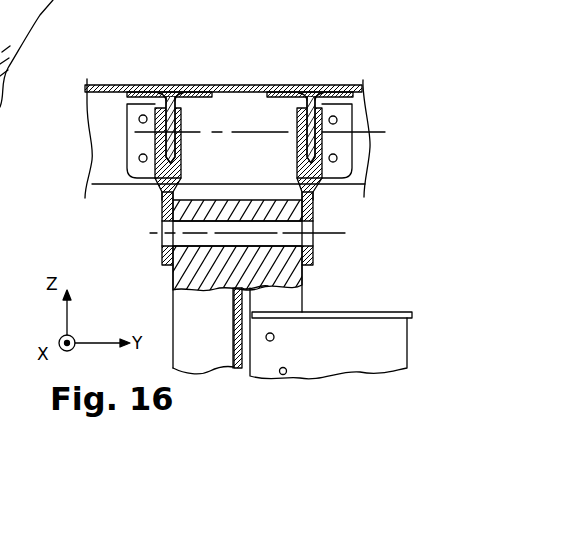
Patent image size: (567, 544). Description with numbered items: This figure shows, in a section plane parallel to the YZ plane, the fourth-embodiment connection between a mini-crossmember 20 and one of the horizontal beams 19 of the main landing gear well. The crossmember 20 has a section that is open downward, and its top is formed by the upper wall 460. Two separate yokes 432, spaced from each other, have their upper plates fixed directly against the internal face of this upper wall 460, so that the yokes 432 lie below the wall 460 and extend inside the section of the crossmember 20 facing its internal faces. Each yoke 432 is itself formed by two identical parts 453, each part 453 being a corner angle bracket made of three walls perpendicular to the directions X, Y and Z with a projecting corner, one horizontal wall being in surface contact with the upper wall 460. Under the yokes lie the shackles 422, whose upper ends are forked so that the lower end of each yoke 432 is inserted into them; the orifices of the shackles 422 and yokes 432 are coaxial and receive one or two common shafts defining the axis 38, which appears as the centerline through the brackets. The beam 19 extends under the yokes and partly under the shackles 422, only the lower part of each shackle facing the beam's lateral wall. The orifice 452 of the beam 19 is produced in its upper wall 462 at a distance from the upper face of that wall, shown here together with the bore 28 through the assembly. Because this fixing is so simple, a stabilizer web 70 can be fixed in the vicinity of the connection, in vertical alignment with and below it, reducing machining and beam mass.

The crossmember 20 is at (97, 105).
The part 453 is at (175, 90).
The upper wall 460 is at (224, 86).
The yoke 432 is at (149, 104).
The axis 38 is at (378, 132).
The shackle 422 is at (154, 203).
The bore 28 is at (336, 234).
The orifice 452 is at (196, 249).
The upper wall 462 is at (268, 273).
The horizontal beam 19 is at (193, 313).
The stabilizer web 70 is at (350, 343).